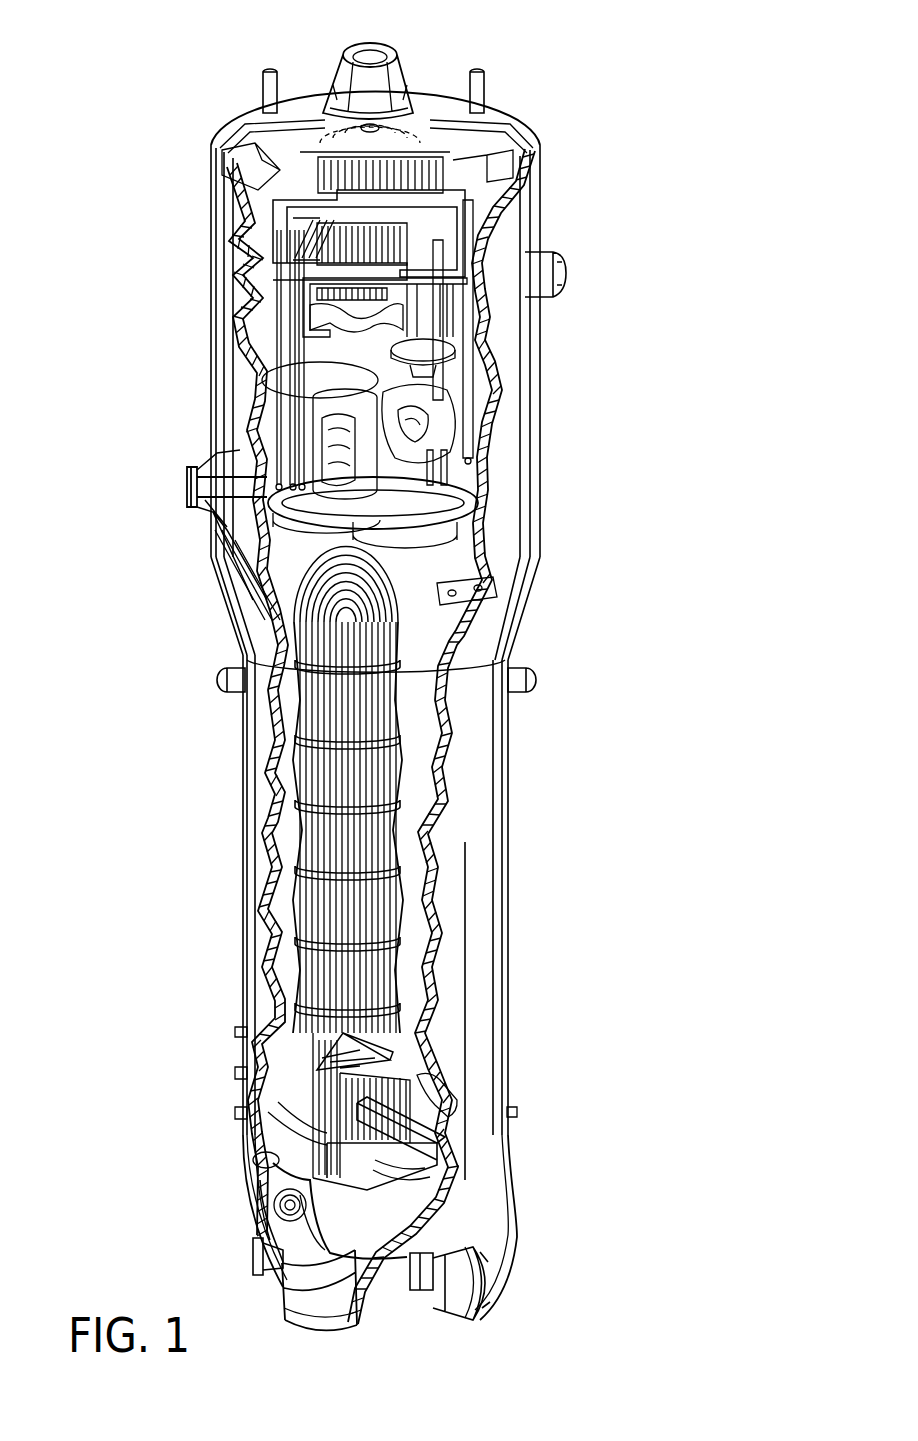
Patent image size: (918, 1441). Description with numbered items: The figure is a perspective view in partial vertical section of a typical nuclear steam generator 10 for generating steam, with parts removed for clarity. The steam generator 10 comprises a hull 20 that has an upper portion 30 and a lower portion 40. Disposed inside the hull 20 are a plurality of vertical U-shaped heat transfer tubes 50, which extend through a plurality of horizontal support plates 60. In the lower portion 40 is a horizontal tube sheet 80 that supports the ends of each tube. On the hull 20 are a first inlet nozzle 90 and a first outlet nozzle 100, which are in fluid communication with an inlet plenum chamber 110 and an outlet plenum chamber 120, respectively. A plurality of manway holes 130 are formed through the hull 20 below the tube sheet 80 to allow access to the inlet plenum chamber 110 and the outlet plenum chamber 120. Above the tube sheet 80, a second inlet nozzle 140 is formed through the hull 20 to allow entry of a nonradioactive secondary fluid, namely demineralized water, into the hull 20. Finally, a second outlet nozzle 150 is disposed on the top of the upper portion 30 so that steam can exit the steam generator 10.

The steam generator 10 is at (617, 127).
The hull 20 is at (527, 325).
The upper portion 30 is at (513, 468).
The lower portion 40 is at (467, 845).
The U-shaped heat transfer tubes 50 is at (367, 990).
The horizontal support plates 60 is at (352, 928).
The tube sheet 80 is at (432, 1153).
The first inlet nozzle 90 is at (478, 1310).
The first outlet nozzle 100 is at (410, 1203).
The inlet plenum chamber 110 is at (445, 1232).
The outlet plenum chamber 120 is at (256, 1158).
The manway holes 130 is at (285, 1203).
The second inlet nozzle 140 is at (196, 470).
The second outlet nozzle 150 is at (346, 50).